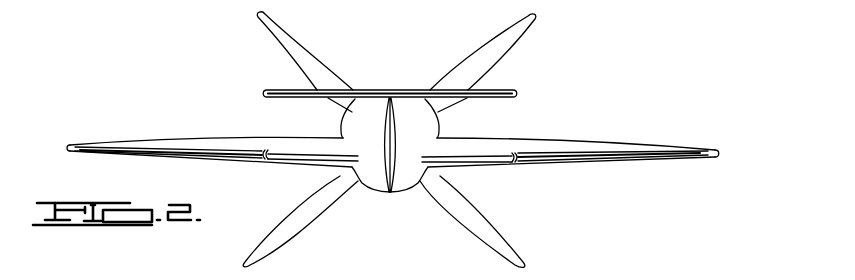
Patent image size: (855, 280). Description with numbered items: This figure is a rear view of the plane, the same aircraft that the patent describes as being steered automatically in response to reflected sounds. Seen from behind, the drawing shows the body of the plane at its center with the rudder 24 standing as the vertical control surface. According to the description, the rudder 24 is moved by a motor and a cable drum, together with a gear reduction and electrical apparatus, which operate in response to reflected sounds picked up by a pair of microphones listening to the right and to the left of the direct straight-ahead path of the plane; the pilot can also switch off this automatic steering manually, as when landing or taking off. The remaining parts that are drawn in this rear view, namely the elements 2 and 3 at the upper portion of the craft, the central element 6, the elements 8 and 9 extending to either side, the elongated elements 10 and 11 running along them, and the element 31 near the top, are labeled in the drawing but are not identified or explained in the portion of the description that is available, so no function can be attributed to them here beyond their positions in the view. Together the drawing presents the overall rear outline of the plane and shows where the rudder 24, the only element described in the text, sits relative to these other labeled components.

The propeller blade 2 is at (295, 40).
The propeller blade 3 is at (518, 30).
The hub 6 is at (348, 125).
The wing 8 is at (490, 167).
The wing 9 is at (297, 149).
The wing spar 10 is at (560, 158).
The wing spar 11 is at (212, 152).
The rudder 24 is at (393, 133).
The disc 31 is at (473, 98).